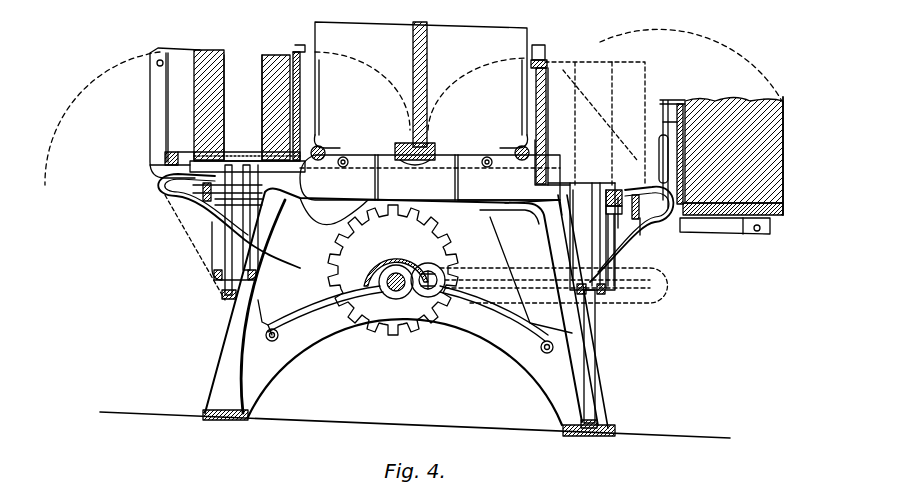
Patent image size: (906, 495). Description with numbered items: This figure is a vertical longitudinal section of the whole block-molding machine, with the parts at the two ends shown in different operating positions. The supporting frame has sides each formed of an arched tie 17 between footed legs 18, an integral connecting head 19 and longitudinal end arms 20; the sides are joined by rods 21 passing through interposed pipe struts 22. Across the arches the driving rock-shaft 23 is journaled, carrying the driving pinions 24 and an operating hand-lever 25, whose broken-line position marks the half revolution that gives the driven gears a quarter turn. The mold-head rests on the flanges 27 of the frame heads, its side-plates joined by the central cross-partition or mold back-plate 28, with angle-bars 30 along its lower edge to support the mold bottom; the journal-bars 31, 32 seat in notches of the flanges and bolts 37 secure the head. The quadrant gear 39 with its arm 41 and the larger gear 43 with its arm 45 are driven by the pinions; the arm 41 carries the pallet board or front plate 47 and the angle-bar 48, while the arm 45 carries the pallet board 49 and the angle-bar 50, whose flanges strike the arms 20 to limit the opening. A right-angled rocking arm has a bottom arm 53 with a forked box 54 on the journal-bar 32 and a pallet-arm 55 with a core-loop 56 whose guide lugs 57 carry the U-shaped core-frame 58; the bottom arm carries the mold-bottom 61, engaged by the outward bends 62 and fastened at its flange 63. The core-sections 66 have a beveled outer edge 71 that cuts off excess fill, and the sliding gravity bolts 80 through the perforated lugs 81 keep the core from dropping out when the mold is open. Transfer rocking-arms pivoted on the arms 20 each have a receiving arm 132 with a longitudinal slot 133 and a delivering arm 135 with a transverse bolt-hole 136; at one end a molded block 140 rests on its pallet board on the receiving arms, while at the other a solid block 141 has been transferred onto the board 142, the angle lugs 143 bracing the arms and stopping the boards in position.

The arched tie 17 is at (403, 313).
The footed legs 18 is at (409, 312).
The connecting head 19 is at (436, 177).
The longitudinal end arms 20 is at (210, 205).
The rods 21 is at (270, 341).
The pipe struts 22 is at (290, 350).
The driving rock-shaft 23 is at (384, 287).
The driving pinions 24 is at (425, 252).
The operating hand-lever 25 is at (665, 305).
The flanges 27 is at (360, 172).
The central cross-bar partition or mold back-plate 28 is at (413, 43).
The angle-bars 30 is at (410, 160).
The journal-bar 31 is at (328, 150).
The journal-bar 32 is at (510, 150).
The bolts 37 is at (345, 168).
The quadrant gear 39 is at (540, 48).
The arm 41 is at (615, 100).
The gear 43 is at (330, 248).
The arm 45 is at (215, 208).
The pallet board or front plate 47 is at (680, 118).
The angle-bar 48 is at (645, 225).
The pallet board 49 is at (247, 153).
The angle-bar 50 is at (203, 192).
The bottom arm 53 is at (525, 112).
The forked box 54 is at (487, 168).
The pallet-arm 55 is at (600, 182).
The core-loop 56 is at (570, 243).
The guide lugs 57 is at (600, 300).
The U-shaped core-frame 58 is at (596, 376).
The face-molding plate or mold-bottom 61 is at (546, 122).
The outward bends 62 is at (530, 215).
The flange 63 is at (547, 62).
The core-sections 66 is at (599, 219).
The outer edge 71 is at (235, 52).
The sliding gravity bolts 80 is at (200, 200).
The perforated lugs 81 is at (606, 199).
The receiving arm 132 is at (668, 124).
The longitudinal slot 133 is at (660, 162).
The delivering arm 135 is at (152, 124).
The transverse bolt-hole 136 is at (157, 62).
The molded block 140 is at (242, 107).
The solid block 141 is at (727, 120).
The board 142 is at (745, 236).
The angle lugs 143 is at (165, 159).